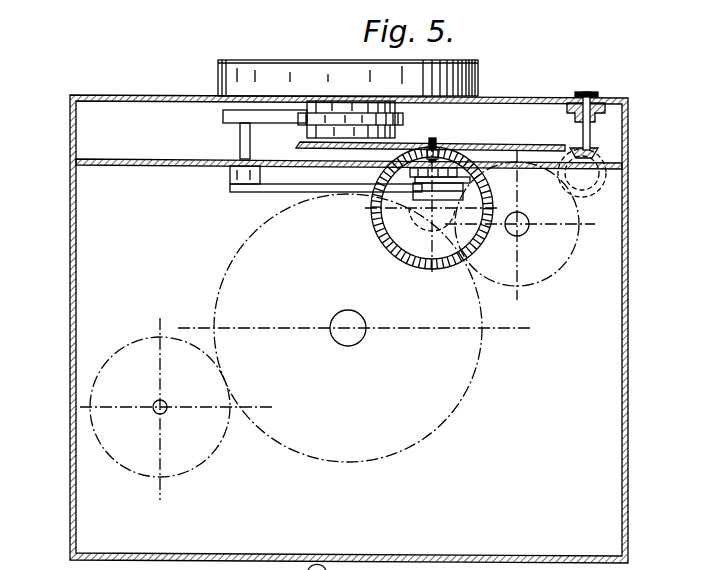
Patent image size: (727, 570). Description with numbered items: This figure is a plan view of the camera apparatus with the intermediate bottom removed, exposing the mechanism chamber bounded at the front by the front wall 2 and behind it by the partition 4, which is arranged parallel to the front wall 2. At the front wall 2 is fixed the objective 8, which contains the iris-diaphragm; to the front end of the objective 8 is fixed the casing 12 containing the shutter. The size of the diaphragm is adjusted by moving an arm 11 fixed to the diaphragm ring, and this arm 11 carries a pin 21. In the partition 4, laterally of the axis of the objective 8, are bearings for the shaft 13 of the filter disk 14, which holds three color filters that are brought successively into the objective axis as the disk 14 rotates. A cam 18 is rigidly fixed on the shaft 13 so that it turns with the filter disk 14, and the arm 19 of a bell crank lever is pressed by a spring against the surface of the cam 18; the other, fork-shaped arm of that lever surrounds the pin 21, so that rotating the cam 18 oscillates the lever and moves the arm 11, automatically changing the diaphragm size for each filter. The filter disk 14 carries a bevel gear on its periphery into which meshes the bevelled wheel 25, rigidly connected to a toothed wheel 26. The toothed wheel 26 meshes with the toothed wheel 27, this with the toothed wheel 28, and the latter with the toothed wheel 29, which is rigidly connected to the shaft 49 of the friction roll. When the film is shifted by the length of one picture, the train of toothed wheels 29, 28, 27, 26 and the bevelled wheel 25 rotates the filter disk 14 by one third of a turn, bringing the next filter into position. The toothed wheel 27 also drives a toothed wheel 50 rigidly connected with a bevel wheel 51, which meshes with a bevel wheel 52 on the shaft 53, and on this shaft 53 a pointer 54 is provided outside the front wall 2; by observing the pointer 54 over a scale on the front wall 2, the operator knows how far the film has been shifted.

The front wall 2 is at (535, 98).
The partition 4 is at (100, 163).
The objective 8 is at (374, 97).
The arm 11 is at (232, 118).
The casing 12 is at (295, 68).
The shaft 13 is at (413, 180).
The disk 14 is at (493, 142).
The cam 18 is at (410, 200).
The arm 19 is at (265, 190).
The pin 21 is at (240, 140).
The bevelled wheel 25 is at (418, 197).
The toothed wheel 26 is at (415, 225).
The toothed wheel 27 is at (560, 272).
The toothed wheel 28 is at (443, 422).
The toothed wheel 29 is at (190, 475).
The shaft 49 is at (158, 405).
The toothed wheel 50 is at (603, 192).
The bevel wheel 51 is at (607, 178).
The bevel wheel 52 is at (598, 150).
The shaft 53 is at (590, 130).
The pointer 54 is at (590, 97).